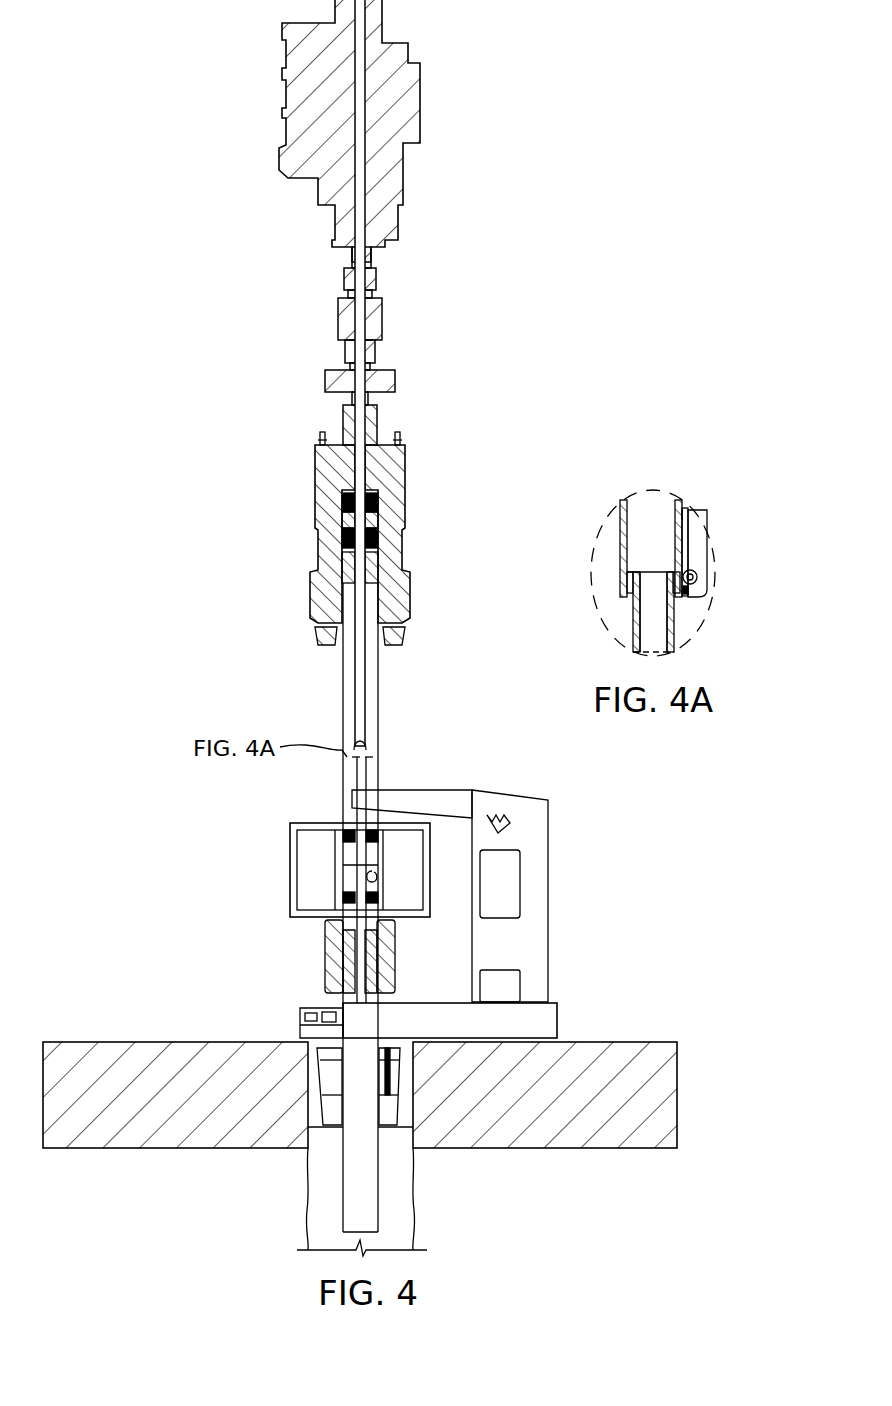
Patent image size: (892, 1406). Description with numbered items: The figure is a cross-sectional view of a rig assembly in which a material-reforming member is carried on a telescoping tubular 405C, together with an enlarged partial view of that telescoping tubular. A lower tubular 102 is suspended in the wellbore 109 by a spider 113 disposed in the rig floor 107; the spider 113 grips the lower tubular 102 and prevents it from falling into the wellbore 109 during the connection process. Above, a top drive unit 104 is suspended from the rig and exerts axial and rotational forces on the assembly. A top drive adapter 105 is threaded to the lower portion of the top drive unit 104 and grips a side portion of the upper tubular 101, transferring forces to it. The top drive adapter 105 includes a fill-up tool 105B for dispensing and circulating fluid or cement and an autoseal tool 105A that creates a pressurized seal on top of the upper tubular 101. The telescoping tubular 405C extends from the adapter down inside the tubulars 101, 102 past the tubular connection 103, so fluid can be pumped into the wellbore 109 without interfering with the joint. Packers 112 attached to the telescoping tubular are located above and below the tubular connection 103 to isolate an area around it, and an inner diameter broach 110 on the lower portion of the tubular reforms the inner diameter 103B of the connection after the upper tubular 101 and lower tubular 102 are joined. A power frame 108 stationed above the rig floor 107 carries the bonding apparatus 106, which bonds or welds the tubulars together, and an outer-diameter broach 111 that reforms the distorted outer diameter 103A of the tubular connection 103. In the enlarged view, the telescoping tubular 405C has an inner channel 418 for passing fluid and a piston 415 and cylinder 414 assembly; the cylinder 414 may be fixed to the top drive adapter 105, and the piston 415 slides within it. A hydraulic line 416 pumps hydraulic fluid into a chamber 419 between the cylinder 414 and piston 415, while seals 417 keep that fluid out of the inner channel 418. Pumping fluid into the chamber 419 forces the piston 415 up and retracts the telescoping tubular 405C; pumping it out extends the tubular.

In FIG. 4, the upper tubular 101 is at (340, 693).
In FIG. 4, the lower tubular 102 is at (380, 1175).
In FIG. 4, the tubular connection 103 is at (330, 850).
In FIG. 4, the outer diameter 103A is at (343, 867).
In FIG. 4, the inner diameter 103B is at (377, 887).
In FIG. 4, the top drive unit 104 is at (402, 97).
In FIG. 4, the top drive adapter 105 is at (310, 533).
In FIG. 4, the autoseal tool 105A is at (330, 560).
In FIG. 4, the fill-up tool 105B is at (342, 538).
In FIG. 4, the bonding apparatus 106 is at (292, 897).
In FIG. 4, the rig floor 107 is at (623, 1045).
In FIG. 4, the power frame 108 is at (537, 943).
In FIG. 4, the wellbore 109 is at (322, 1230).
In FIG. 4, the inner diameter broach 110 is at (327, 952).
In FIG. 4, the outer-diameter broach 111 is at (325, 984).
In FIG. 4, the packers 112 is at (372, 830).
In FIG. 4, the spider 113 is at (327, 1088).
In FIG. 4, the telescoping tubular 405C is at (353, 650).
In FIG. 4A, the cylinder 414 is at (683, 513).
In FIG. 4A, the piston 415 is at (673, 643).
In FIG. 4A, the hydraulic line 416 is at (707, 553).
In FIG. 4A, the seals 417 is at (613, 603).
In FIG. 4A, the inner channel 418 is at (640, 512).
In FIG. 4A, the chamber 419 is at (668, 563).